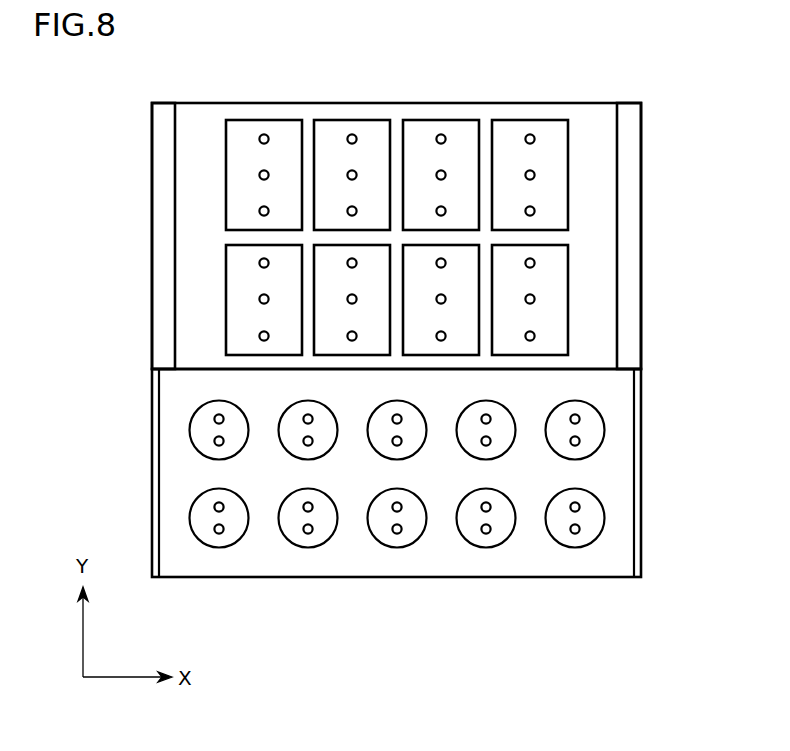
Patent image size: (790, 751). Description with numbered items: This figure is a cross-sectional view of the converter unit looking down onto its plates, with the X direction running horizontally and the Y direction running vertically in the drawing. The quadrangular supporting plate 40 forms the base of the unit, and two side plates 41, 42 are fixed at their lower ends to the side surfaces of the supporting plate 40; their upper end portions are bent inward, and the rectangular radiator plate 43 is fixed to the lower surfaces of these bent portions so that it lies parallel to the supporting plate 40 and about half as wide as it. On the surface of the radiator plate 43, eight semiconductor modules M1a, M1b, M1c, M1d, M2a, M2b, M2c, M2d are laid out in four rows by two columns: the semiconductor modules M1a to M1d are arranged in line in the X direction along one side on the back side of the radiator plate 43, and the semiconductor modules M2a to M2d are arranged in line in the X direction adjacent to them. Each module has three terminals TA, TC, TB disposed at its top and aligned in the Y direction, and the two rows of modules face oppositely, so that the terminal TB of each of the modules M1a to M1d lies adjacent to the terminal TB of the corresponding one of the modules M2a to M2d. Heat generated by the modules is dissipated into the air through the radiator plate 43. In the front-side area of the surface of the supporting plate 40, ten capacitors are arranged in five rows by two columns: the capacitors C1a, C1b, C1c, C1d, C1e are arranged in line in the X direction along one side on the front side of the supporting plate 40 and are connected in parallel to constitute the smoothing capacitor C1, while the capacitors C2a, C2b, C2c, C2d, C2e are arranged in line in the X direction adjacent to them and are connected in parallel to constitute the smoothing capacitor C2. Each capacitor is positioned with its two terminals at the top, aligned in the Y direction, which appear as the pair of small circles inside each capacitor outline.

The supporting plate 40 is at (174, 558).
The side plate 41 is at (165, 158).
The side plate 42 is at (630, 123).
The radiator plate 43 is at (192, 122).
The semiconductor module M1a is at (246, 133).
The semiconductor module M1b is at (334, 133).
The semiconductor module M1c is at (423, 133).
The semiconductor module M1d is at (512, 133).
The semiconductor module M2a is at (238, 318).
The semiconductor module M2b is at (325, 255).
The semiconductor module M2c is at (471, 253).
The semiconductor module M2d is at (555, 345).
The terminal TA is at (535, 139).
The terminal TB is at (535, 211).
The terminal TC is at (535, 175).
The smoothing capacitor C1 is at (442, 556).
The smoothing capacitor C2 is at (442, 522).
The capacitor C1a is at (218, 541).
The capacitor C1b is at (307, 541).
The capacitor C1c is at (396, 541).
The capacitor C1d is at (485, 541).
The capacitor C1e is at (574, 541).
The capacitor C2a is at (237, 446).
The capacitor C2b is at (326, 446).
The capacitor C2c is at (415, 446).
The capacitor C2d is at (504, 446).
The capacitor C2e is at (593, 446).